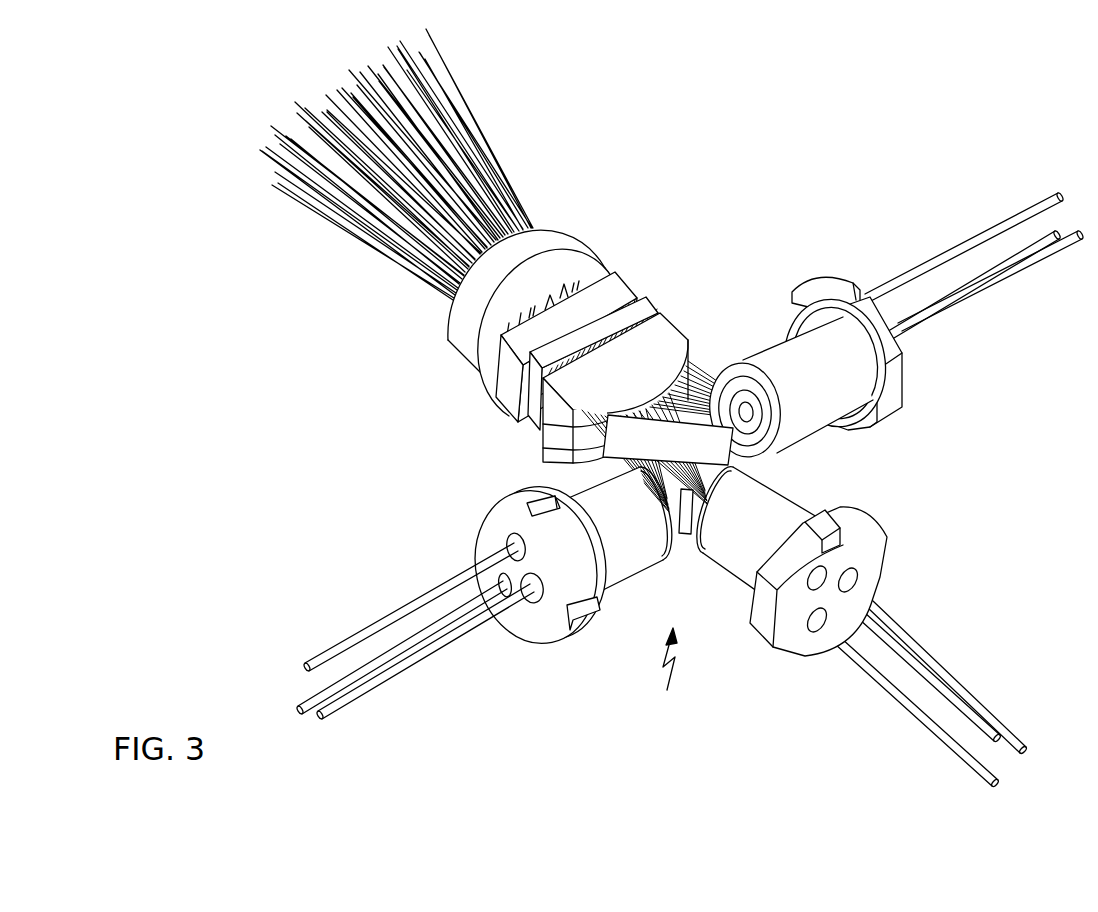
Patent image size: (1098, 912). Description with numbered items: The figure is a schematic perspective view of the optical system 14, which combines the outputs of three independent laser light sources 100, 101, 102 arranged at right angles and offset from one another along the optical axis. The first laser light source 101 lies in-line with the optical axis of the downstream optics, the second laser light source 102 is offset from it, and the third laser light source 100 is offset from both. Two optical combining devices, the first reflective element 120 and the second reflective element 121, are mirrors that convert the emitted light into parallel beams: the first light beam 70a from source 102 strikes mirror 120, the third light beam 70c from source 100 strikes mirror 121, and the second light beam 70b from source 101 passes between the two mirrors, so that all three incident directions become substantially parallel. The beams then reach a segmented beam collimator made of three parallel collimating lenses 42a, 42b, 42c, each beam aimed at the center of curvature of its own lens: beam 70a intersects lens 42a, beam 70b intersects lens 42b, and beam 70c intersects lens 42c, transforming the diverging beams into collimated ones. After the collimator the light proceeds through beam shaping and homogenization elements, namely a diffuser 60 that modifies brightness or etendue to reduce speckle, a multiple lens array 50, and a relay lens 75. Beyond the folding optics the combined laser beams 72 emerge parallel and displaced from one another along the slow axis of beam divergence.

The optical system 14 is at (665, 671).
The collimating lens 42a is at (555, 402).
The collimating lens 42b is at (549, 428).
The collimating lens 42c is at (556, 453).
The multiple lens array 50 is at (621, 282).
The diffuser 60 is at (646, 300).
The first light beam 70a is at (727, 385).
The second light beam 70b is at (699, 497).
The third light beam 70c is at (670, 506).
The combined laser beams 72 is at (505, 186).
The relay lens 75 is at (568, 242).
The laser light source 100 is at (484, 593).
The laser light source 101 is at (862, 627).
The laser light source 102 is at (894, 326).
The first reflective element 120 is at (640, 458).
The second reflective element 121 is at (688, 534).